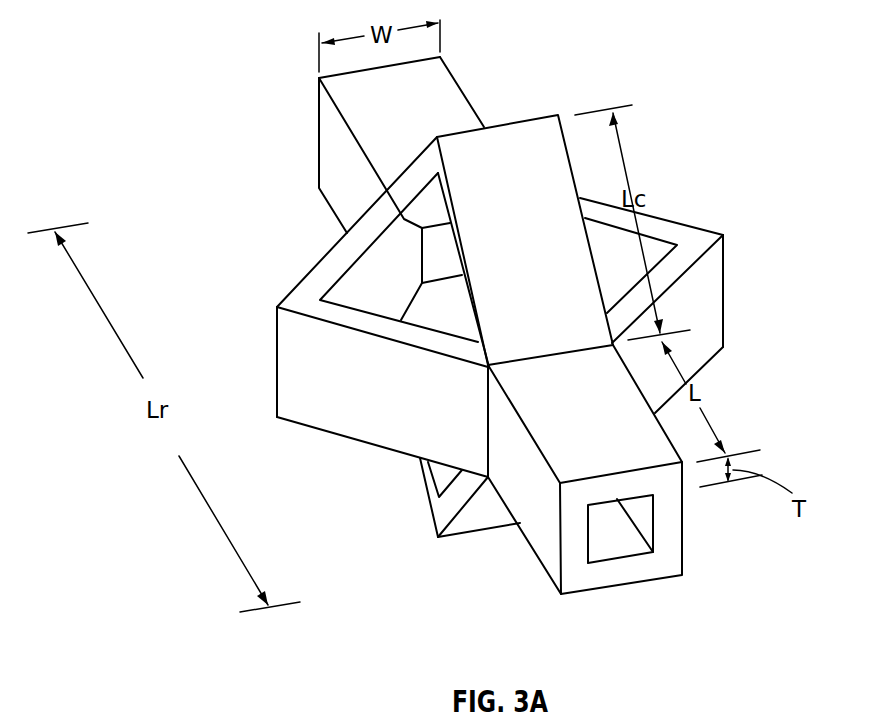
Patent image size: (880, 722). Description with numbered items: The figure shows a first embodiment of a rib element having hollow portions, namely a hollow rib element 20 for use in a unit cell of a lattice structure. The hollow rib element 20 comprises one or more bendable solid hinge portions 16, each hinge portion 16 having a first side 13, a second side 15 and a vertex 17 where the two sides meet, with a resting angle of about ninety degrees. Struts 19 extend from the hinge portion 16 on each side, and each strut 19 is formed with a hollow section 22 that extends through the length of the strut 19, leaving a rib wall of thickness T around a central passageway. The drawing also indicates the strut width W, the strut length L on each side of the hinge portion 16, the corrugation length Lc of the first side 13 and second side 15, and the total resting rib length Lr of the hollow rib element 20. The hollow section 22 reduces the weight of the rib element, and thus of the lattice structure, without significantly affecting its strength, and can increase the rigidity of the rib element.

The first side 13 is at (470, 305).
The second side 15 is at (413, 170).
The hinge portion 16 is at (665, 154).
The vertex 17 is at (500, 127).
The strut 19 is at (357, 113).
The hollow rib element 20 is at (761, 49).
The hollow section 22 is at (625, 570).